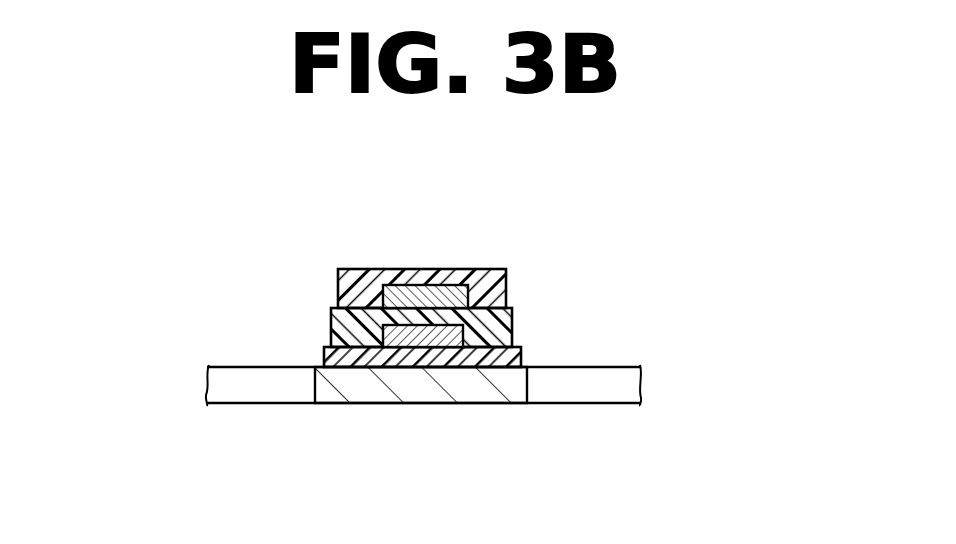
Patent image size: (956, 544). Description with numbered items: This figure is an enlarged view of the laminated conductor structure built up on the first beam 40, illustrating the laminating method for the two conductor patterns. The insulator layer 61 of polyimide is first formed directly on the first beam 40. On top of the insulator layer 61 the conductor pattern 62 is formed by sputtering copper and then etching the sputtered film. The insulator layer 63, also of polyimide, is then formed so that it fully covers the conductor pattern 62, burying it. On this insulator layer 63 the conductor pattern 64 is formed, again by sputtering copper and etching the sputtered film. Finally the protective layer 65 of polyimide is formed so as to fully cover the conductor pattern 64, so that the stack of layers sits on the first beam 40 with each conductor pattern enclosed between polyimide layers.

The first beam 40 is at (428, 403).
The insulator layer 61 is at (515, 352).
The conductor pattern 62 is at (382, 338).
The insulator layer 63 is at (510, 317).
The conductor pattern 64 is at (407, 292).
The protective layer 65 is at (478, 268).